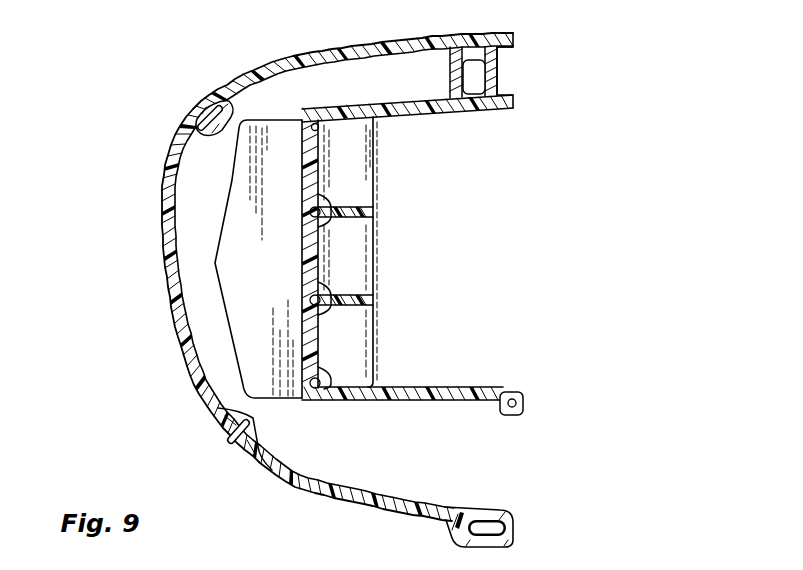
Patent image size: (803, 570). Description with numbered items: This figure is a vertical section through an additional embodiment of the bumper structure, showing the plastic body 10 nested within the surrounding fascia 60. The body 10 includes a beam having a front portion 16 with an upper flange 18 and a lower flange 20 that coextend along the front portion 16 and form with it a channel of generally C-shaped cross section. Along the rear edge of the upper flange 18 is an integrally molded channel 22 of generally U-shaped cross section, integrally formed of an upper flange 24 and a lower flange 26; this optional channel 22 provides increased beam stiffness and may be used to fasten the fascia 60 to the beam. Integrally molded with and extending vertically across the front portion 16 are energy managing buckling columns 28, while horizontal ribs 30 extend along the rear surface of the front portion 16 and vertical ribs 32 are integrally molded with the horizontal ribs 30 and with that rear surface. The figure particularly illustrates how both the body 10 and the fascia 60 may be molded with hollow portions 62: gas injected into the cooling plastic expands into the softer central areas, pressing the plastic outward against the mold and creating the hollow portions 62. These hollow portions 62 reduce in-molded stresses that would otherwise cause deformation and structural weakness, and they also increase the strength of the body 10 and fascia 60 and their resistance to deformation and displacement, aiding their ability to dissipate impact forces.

The body 10 is at (326, 404).
The front portion 16 is at (301, 248).
The upper flange 18 is at (511, 75).
The lower flange 20 is at (478, 364).
The channel 22 is at (462, 91).
The upper flange 24 is at (477, 62).
The lower flange 26 is at (499, 92).
The energy managing buckling columns 28 is at (235, 164).
The horizontal ribs 30 is at (375, 213).
The vertical ribs 32 is at (375, 253).
The fascia 60 is at (167, 289).
The hollow portions 62 is at (205, 121).